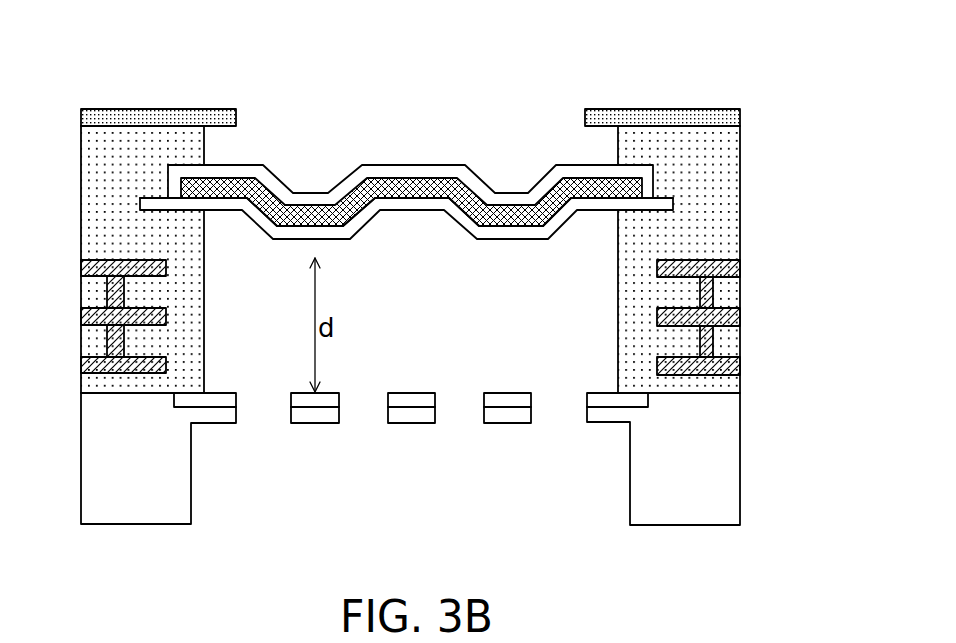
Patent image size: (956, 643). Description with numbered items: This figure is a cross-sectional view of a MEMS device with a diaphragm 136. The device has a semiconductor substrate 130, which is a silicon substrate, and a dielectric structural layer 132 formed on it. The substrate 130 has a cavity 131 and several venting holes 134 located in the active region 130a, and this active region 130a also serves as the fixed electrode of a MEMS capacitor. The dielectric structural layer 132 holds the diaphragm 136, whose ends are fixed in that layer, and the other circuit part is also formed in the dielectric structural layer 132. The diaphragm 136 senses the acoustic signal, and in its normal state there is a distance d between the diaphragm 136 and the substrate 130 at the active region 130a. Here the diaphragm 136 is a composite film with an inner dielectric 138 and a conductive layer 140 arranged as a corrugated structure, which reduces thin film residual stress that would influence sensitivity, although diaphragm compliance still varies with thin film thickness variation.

The semiconductor substrate 130 is at (712, 472).
The active region 130a is at (445, 393).
The cavity 131 is at (444, 487).
The dielectric structural layer 132 is at (758, 125).
The venting holes 134 is at (559, 410).
The diaphragm 136 is at (406, 138).
The inner dielectric 138 is at (460, 80).
The conductive layer 140 is at (425, 167).